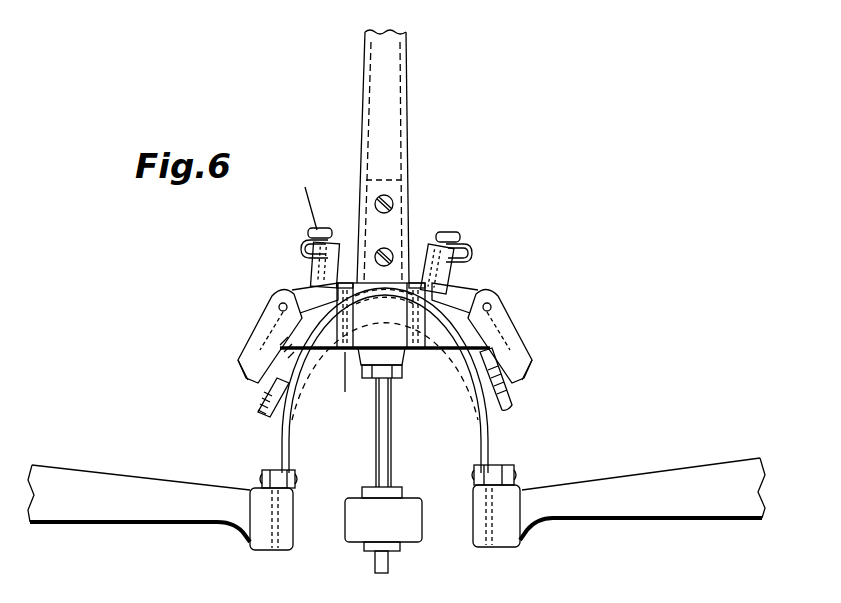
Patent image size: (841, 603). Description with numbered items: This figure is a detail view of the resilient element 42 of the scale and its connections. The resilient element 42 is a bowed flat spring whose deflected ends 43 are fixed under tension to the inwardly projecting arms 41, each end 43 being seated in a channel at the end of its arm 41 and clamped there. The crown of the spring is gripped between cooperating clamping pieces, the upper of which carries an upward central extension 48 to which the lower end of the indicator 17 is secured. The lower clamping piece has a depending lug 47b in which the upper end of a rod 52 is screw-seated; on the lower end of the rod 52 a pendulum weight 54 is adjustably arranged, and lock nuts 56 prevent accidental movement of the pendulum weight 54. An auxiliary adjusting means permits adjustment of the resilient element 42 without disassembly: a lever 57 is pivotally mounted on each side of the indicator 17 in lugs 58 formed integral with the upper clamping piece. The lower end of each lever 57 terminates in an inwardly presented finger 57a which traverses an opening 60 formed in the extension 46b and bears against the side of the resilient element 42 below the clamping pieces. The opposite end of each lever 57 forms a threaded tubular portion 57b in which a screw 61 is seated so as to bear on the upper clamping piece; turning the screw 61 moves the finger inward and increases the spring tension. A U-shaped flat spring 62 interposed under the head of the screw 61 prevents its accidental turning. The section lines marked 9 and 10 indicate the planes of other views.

The indicator 17 is at (394, 95).
The upward central extension 48 is at (404, 220).
The resilient element 42 is at (268, 441).
The lever 57 is at (267, 323).
The lugs 58 is at (280, 303).
The inwardly presented finger 57a is at (533, 338).
The threaded tubular portion 57b is at (480, 262).
The opening 60 is at (268, 388).
The extension 46b is at (545, 385).
The screw 61 is at (323, 230).
The U-shaped flat spring 62 is at (305, 247).
The depending lug 47b is at (400, 358).
The rod 52 is at (386, 441).
The lock nuts 56 is at (373, 488).
The pendulum weight 54 is at (383, 520).
The deflected ends 43 is at (290, 547).
The section line 10 is at (542, 500).
The arm 41 is at (90, 508).
The section line 9 is at (320, 296).